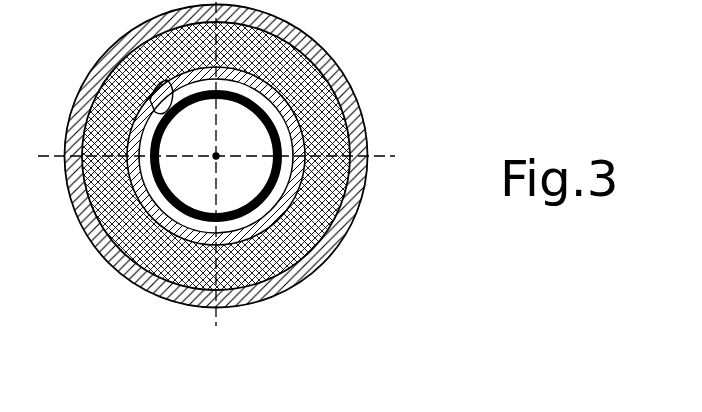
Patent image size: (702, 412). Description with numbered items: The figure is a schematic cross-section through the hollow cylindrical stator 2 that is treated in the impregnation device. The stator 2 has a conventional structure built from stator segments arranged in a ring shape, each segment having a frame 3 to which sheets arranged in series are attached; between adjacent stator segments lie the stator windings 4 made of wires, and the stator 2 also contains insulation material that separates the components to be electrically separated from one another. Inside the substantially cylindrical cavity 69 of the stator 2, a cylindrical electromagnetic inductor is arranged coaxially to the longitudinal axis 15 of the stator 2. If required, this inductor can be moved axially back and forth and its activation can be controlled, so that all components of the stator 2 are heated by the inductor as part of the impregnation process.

The stator 2 is at (374, 77).
The frame 3 is at (83, 222).
The stator windings 4 is at (95, 120).
The cylindrical cavity 69 is at (162, 110).
The longitudinal axis 15 is at (216, 156).